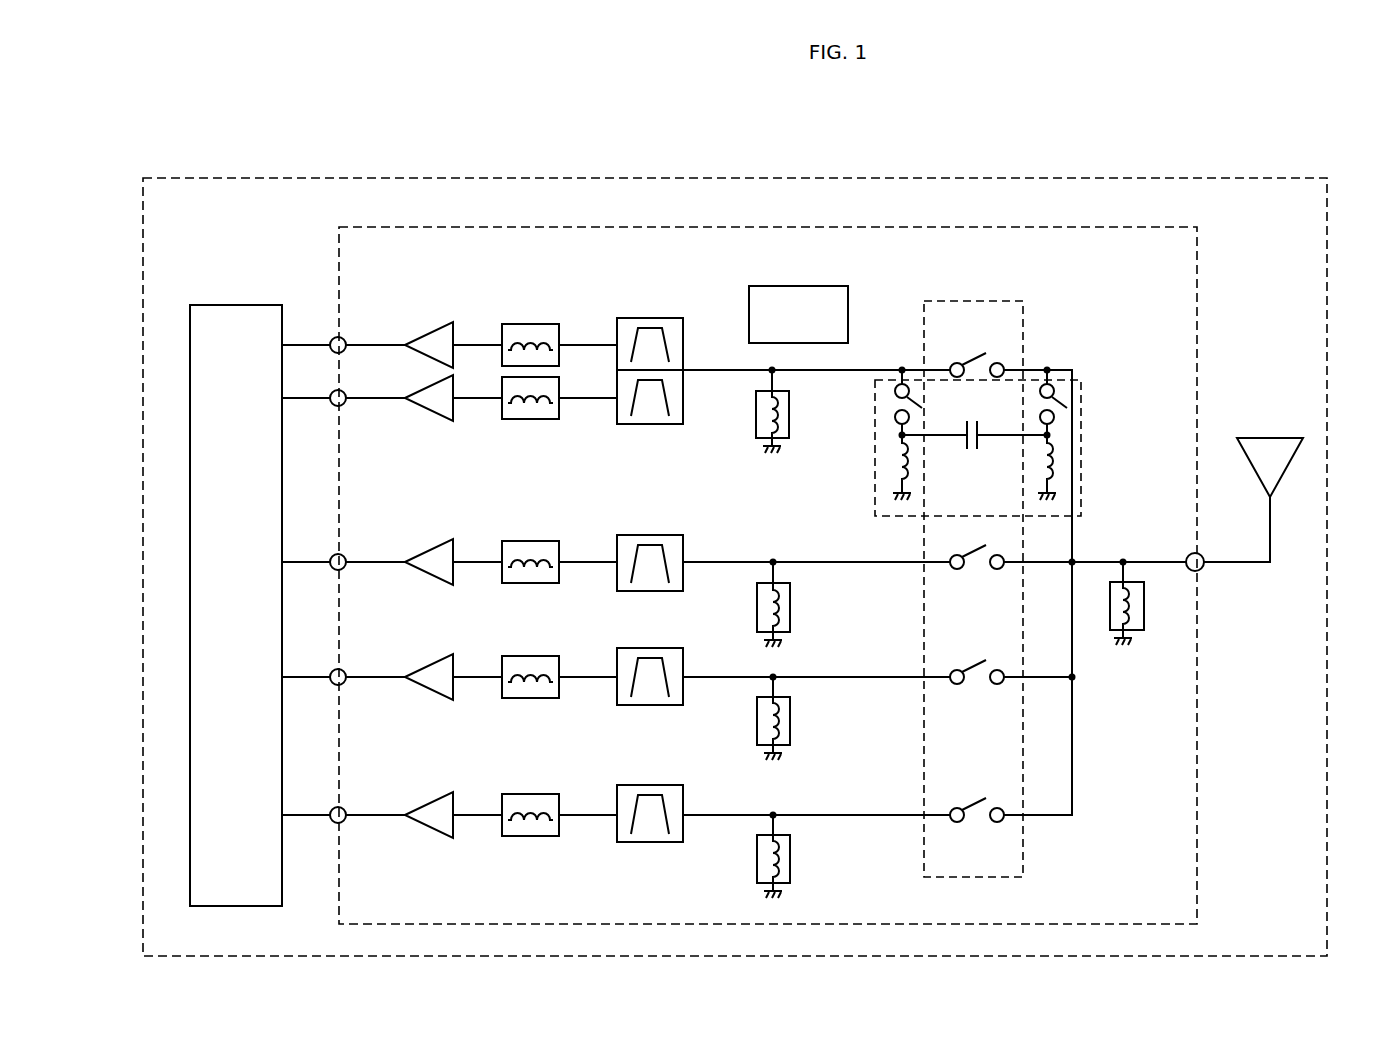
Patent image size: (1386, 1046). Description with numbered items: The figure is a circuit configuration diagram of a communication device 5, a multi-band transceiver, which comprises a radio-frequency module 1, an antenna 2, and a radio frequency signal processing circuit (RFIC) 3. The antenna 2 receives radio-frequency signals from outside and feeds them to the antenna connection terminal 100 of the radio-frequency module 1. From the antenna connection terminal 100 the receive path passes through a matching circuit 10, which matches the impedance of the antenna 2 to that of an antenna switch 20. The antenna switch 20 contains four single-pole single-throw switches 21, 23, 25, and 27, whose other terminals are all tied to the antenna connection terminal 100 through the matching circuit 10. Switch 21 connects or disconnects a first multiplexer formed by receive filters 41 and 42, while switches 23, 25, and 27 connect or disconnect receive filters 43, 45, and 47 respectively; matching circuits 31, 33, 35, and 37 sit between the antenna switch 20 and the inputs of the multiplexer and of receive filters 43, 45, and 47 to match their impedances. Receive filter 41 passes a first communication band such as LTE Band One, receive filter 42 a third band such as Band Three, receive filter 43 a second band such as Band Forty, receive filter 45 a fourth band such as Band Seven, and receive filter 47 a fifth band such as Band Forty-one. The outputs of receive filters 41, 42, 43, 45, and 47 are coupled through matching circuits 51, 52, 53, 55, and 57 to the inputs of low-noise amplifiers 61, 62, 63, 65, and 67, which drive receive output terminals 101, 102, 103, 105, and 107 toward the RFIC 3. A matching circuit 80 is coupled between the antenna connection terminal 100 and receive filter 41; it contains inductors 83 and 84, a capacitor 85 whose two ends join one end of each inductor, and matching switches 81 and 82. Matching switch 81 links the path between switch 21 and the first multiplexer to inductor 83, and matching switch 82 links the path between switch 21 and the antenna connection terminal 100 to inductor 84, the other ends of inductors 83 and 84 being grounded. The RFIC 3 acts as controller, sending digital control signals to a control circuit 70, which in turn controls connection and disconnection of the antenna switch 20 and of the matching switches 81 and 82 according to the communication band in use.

The radio-frequency module 1 is at (893, 228).
The antenna 2 is at (1265, 438).
The radio frequency signal processing circuit (RFIC) 3 is at (228, 305).
The communication device 5 is at (1243, 177).
The matching circuit 10 is at (1145, 600).
The antenna switch 20 is at (1024, 324).
The switch 21 is at (966, 352).
The switch 23 is at (977, 567).
The switch 25 is at (977, 682).
The switch 27 is at (977, 820).
The matching circuit 31 is at (790, 405).
The matching circuit 33 is at (791, 600).
The matching circuit 35 is at (791, 714).
The matching circuit 37 is at (791, 852).
The receive filter 41 is at (684, 345).
The receive filter 42 is at (684, 398).
The receive filter 43 is at (684, 550).
The receive filter 45 is at (684, 666).
The receive filter 47 is at (684, 806).
The matching circuit 51 is at (560, 338).
The matching circuit 52 is at (560, 406).
The matching circuit 53 is at (560, 555).
The matching circuit 55 is at (560, 670).
The matching circuit 57 is at (560, 808).
The low-noise amplifier 61 is at (455, 338).
The low-noise amplifier 62 is at (455, 406).
The low-noise amplifier 63 is at (455, 555).
The low-noise amplifier 65 is at (455, 670).
The low-noise amplifier 67 is at (455, 808).
The control circuit 70 is at (775, 286).
The matching circuit 80 is at (1082, 434).
The matching switch 81 is at (896, 404).
The matching switch 82 is at (1066, 405).
The inductor 83 is at (897, 462).
The inductor 84 is at (1064, 462).
The capacitor 85 is at (972, 450).
The antenna connection terminal 100 is at (1202, 569).
The receive output terminal 101 is at (344, 351).
The receive output terminal 102 is at (344, 404).
The receive output terminal 103 is at (344, 556).
The receive output terminal 105 is at (344, 671).
The receive output terminal 107 is at (344, 809).